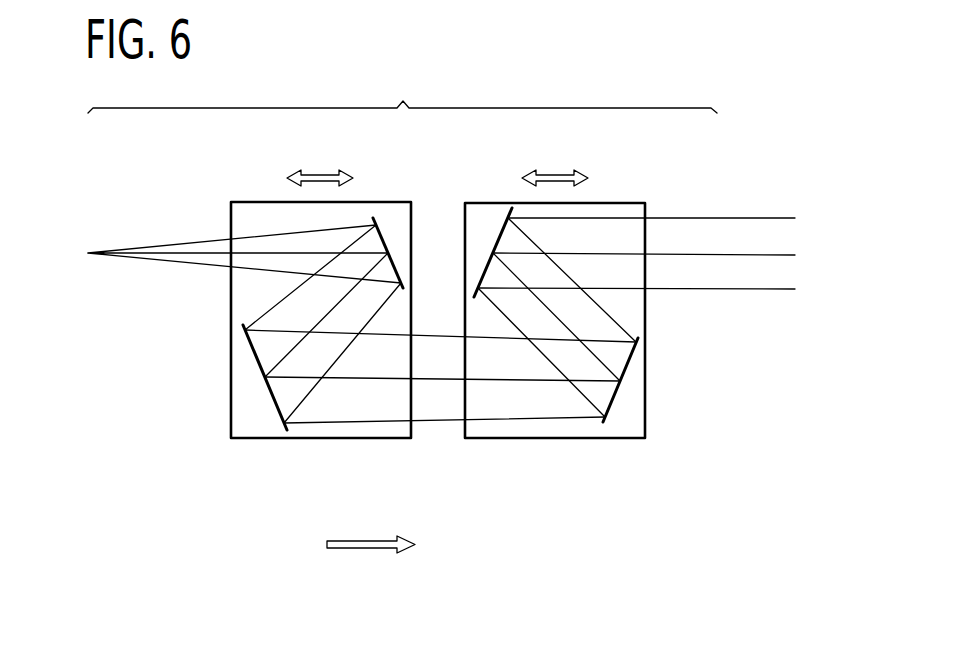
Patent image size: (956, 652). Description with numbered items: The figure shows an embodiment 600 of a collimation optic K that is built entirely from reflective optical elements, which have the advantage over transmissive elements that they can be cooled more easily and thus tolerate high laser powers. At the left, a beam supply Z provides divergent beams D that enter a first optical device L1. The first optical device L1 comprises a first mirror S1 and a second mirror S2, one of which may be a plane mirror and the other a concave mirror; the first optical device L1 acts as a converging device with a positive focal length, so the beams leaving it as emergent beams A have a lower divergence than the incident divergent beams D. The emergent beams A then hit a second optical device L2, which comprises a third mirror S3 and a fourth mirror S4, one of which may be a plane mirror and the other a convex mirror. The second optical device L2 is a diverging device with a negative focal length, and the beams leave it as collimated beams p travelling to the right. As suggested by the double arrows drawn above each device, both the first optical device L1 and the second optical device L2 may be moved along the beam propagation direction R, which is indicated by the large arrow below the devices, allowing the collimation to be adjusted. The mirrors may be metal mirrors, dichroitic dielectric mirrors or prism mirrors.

The collimation optic K is at (402, 89).
The embodiment 600 is at (139, 329).
The beam supply Z is at (89, 250).
The divergent beams D is at (181, 243).
The first mirror S1 is at (384, 233).
The second mirror S2 is at (255, 362).
The third mirror S3 is at (645, 362).
The fourth mirror S4 is at (497, 232).
The first optical device L1 is at (328, 440).
The second optical device L2 is at (597, 440).
The emergent beams A is at (437, 425).
The collimated beams p is at (760, 290).
The beam propagation direction R is at (365, 550).